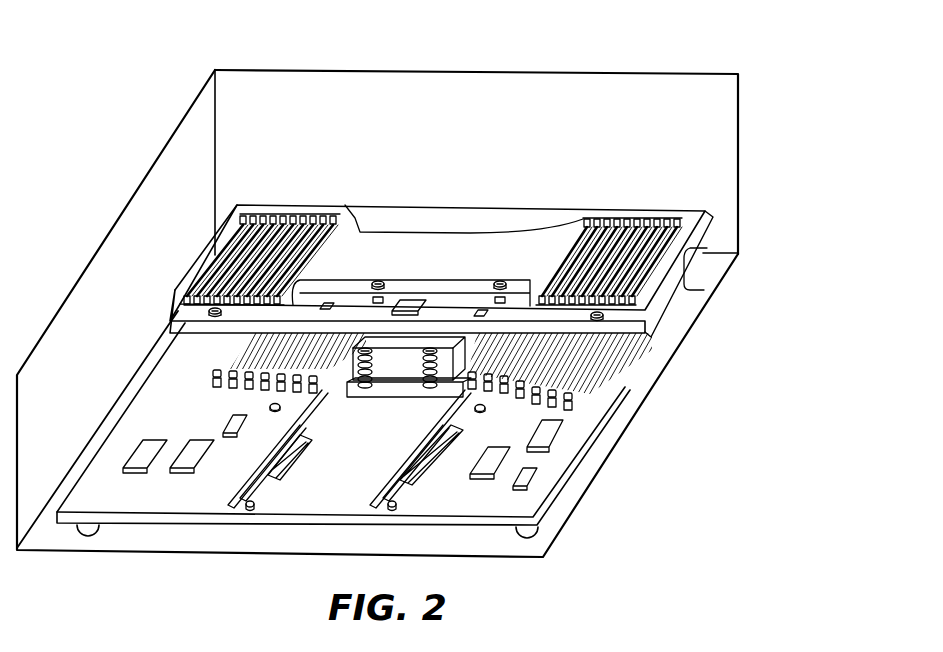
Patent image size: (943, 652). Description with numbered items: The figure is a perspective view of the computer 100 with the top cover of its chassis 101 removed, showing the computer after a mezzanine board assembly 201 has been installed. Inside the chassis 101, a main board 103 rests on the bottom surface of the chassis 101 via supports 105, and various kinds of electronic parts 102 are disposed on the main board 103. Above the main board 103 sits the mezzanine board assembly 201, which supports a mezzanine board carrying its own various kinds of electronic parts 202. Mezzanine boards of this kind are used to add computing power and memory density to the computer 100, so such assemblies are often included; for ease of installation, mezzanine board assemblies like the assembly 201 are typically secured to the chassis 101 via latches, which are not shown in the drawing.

The computer 100 is at (697, 50).
The chassis 101 is at (720, 164).
The electronic parts 102 is at (412, 340).
The main board 103 is at (550, 462).
The supports 105 is at (537, 524).
The mezzanine board assembly 201 is at (647, 214).
The electronic parts 202 is at (281, 222).